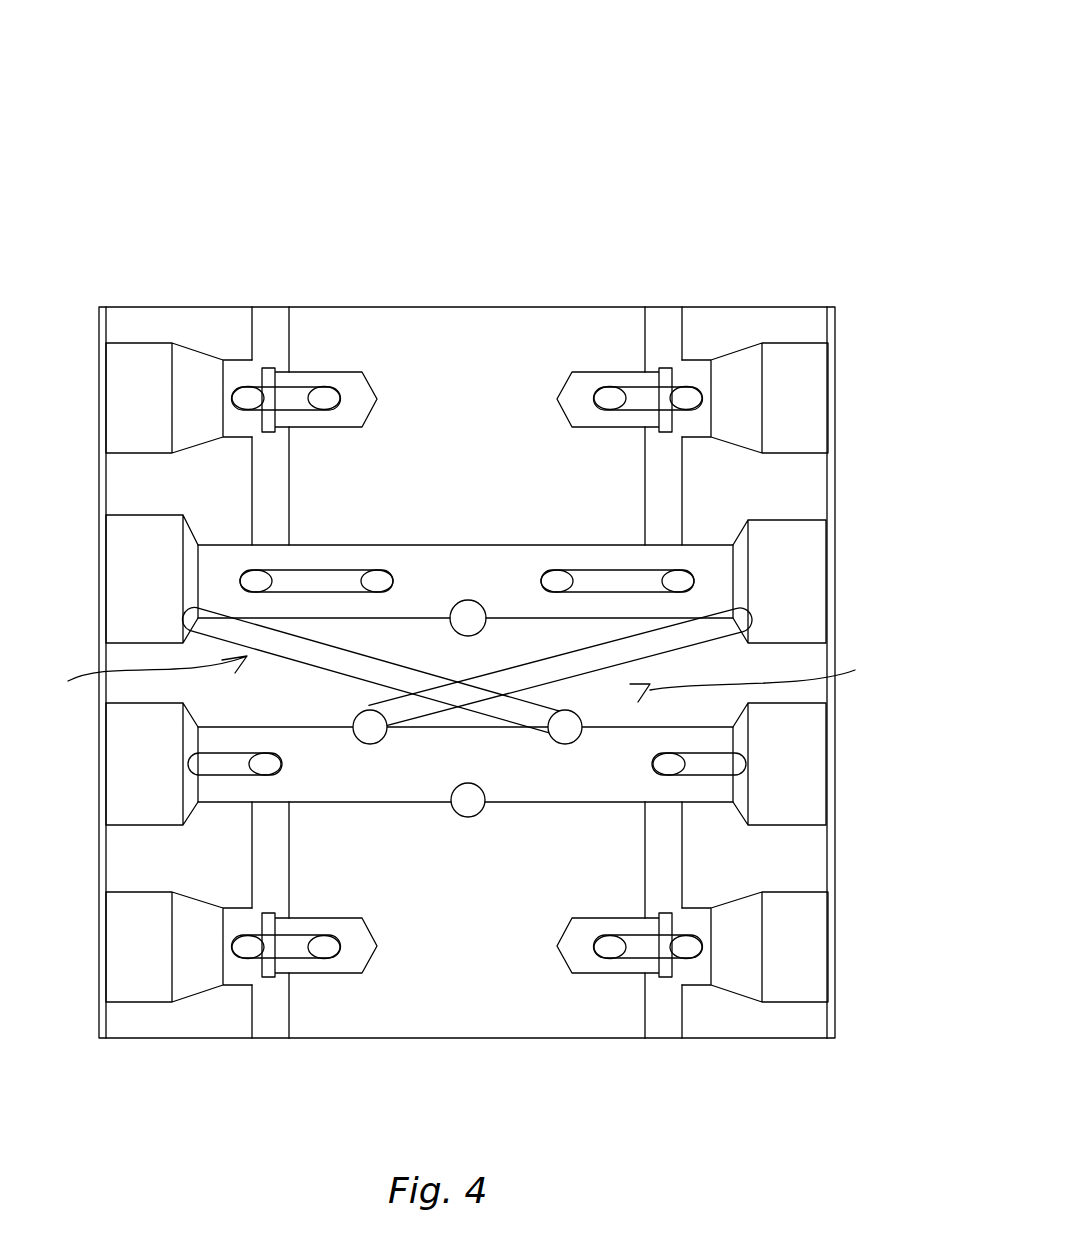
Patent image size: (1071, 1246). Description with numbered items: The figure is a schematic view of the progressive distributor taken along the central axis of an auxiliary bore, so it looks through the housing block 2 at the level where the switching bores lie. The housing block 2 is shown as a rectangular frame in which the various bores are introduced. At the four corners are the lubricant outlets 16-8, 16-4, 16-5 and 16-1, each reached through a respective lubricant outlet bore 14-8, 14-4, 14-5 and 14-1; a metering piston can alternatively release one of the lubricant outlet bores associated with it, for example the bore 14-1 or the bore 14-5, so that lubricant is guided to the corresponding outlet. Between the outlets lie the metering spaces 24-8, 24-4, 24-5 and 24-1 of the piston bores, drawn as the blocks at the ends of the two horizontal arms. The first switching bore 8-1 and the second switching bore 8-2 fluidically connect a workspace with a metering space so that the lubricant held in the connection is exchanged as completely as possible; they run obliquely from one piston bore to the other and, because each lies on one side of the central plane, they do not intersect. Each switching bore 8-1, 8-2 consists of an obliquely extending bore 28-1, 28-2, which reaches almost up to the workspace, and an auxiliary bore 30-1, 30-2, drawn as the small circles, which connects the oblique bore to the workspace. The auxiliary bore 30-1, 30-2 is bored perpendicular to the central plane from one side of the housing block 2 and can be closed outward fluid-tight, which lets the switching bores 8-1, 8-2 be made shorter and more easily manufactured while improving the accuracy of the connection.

The housing block 2 is at (790, 317).
The lubricant outlet bore 14-8 is at (273, 315).
The lubricant outlet bore 14-4 is at (668, 317).
The lubricant outlet bore 14-5 is at (262, 1045).
The lubricant outlet bore 14-1 is at (665, 1030).
The lubricant outlet 16-8 is at (121, 399).
The lubricant outlet 16-4 is at (826, 372).
The lubricant outlet 16-5 is at (123, 980).
The lubricant outlet 16-1 is at (818, 968).
The metering space 24-8 is at (116, 583).
The metering space 24-4 is at (820, 546).
The metering space 24-5 is at (114, 765).
The metering space 24-1 is at (818, 792).
The obliquely extending bore 28-1 is at (673, 646).
The obliquely extending bore 28-2 is at (365, 660).
The auxiliary bore 30-1 is at (355, 714).
The auxiliary bore 30-2 is at (584, 722).
The first switching bore 8-1 is at (767, 679).
The second switching bore 8-2 is at (126, 679).